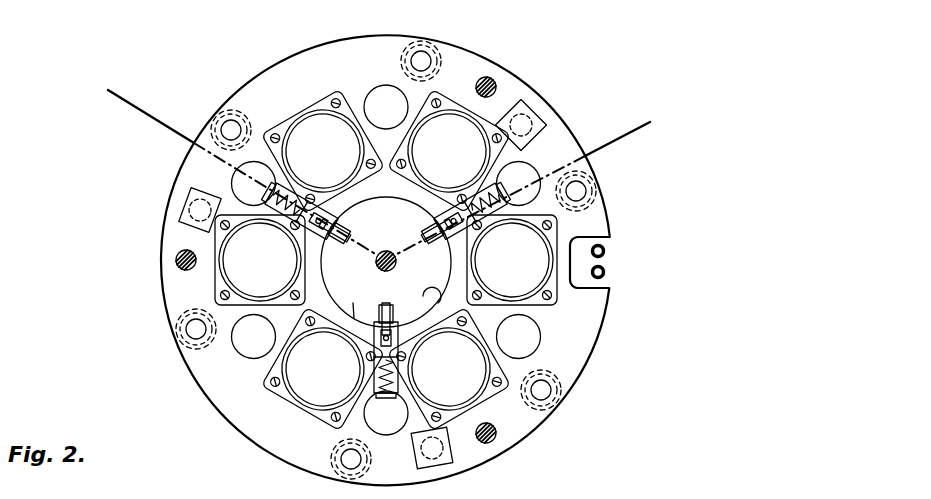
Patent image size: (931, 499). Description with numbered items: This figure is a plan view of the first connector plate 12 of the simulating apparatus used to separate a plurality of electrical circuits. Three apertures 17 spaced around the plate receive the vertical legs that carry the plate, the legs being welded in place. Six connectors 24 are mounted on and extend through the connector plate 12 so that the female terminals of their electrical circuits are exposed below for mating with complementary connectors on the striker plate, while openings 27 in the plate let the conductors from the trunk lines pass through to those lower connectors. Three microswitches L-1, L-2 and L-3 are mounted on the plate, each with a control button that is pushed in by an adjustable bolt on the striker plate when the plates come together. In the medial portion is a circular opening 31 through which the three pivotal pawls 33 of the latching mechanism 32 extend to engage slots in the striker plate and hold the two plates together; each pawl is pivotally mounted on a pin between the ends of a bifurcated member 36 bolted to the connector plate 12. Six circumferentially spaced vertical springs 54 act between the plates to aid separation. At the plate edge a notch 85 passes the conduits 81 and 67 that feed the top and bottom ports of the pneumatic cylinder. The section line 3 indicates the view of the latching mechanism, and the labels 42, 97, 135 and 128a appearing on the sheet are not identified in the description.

The connector plate 12 is at (551, 414).
The apertures 17 is at (494, 80).
The connector 24 is at (498, 153).
The openings 27 is at (383, 85).
The circular opening 31 is at (433, 298).
The latching mechanism 32 is at (333, 240).
The pivotal pawls 33 is at (352, 236).
The bifurcated member 36 is at (427, 204).
The spring clamp 42 is at (403, 398).
The vertical springs 54 is at (432, 45).
The conduit 67 is at (607, 272).
The conduit 81 is at (607, 251).
The notches 85 is at (598, 285).
The section line 3- 3 is at (117, 114).
The microswitch L-1 is at (453, 467).
The microswitch L-2 is at (532, 114).
The microswitch L-3 is at (186, 191).
The partial label 97 is at (248, 492).
The partial label 135 is at (540, 494).
The partial label 128a is at (631, 488).